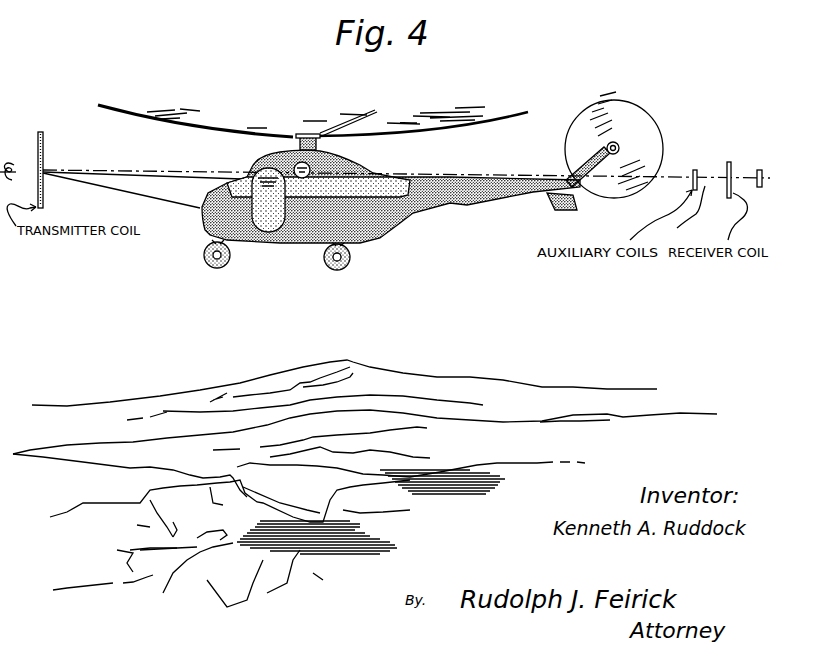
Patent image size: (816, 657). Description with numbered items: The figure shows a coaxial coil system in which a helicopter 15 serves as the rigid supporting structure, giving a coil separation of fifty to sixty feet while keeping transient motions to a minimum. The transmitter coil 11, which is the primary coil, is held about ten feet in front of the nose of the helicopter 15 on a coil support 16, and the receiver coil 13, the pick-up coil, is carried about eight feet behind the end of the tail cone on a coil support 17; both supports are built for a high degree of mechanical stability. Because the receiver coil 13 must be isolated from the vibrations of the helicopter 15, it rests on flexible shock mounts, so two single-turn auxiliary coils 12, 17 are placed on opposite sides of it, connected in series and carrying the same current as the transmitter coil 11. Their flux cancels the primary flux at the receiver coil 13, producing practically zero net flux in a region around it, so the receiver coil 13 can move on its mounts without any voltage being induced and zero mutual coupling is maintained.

The transmitter coil 11 is at (43, 152).
The auxiliary coil 12 is at (733, 193).
The receiver coil 13 is at (758, 170).
The helicopter 15 is at (300, 252).
The coil support 16 is at (163, 182).
The coil support 17 is at (672, 174).